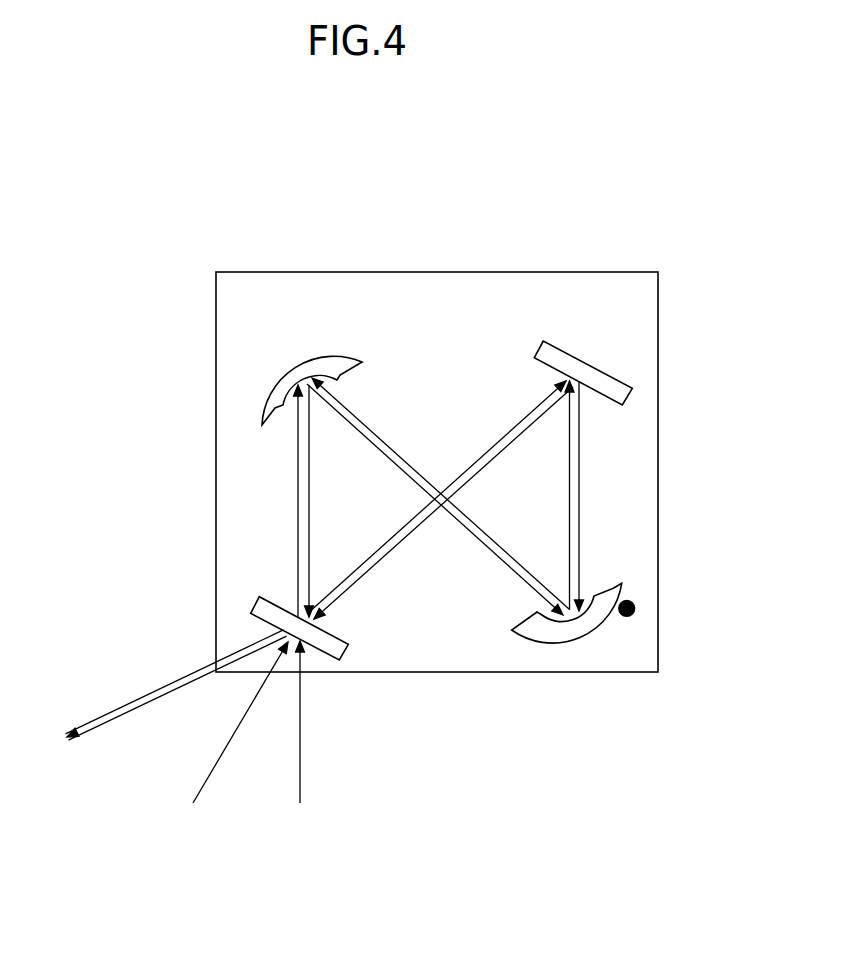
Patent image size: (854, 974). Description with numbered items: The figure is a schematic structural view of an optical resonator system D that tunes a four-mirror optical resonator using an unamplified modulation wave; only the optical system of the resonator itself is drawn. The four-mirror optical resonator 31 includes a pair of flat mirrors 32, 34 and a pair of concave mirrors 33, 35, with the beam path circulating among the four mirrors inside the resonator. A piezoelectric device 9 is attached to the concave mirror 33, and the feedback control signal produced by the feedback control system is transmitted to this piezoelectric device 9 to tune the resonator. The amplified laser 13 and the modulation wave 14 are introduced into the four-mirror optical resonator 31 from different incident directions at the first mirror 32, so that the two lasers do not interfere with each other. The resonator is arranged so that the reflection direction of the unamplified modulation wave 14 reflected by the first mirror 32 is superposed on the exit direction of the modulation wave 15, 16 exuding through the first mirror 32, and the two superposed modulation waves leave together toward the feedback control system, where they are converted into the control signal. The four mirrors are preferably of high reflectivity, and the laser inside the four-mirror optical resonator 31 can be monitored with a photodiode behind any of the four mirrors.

The optical resonator system D is at (443, 227).
The 4-mirror optical resonator 31 is at (437, 459).
The mirror-1 32 is at (300, 607).
The concave mirror 33 is at (575, 597).
The flat mirror 34 is at (583, 361).
The concave mirror 35 is at (312, 371).
The piezoelectric device 9 is at (630, 624).
The amplified laser 13 is at (301, 717).
The modulation wave 14 is at (232, 733).
The modulation wave 15 is at (165, 688).
The modulation wave 16 is at (178, 688).